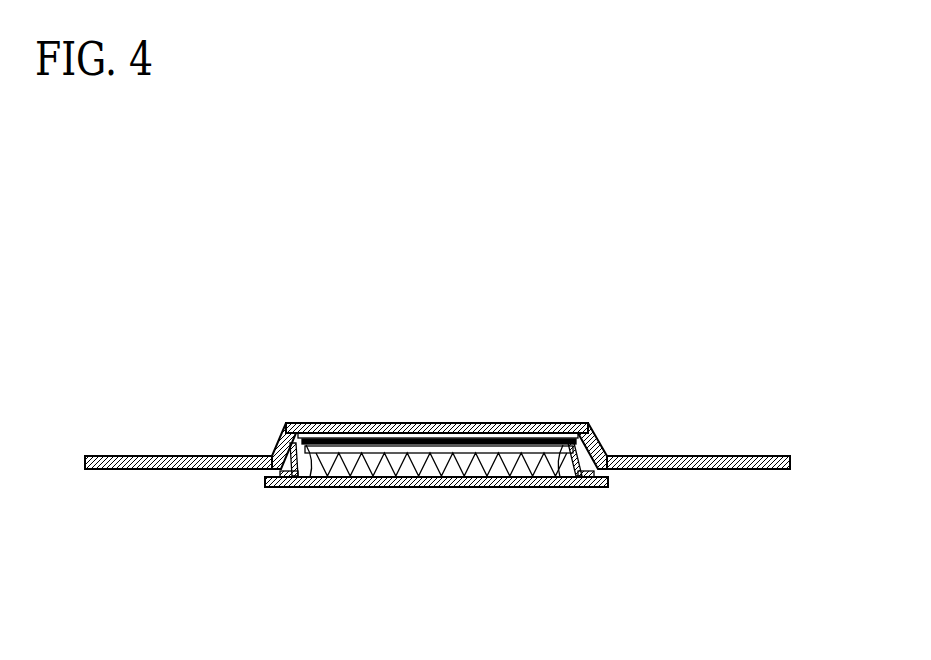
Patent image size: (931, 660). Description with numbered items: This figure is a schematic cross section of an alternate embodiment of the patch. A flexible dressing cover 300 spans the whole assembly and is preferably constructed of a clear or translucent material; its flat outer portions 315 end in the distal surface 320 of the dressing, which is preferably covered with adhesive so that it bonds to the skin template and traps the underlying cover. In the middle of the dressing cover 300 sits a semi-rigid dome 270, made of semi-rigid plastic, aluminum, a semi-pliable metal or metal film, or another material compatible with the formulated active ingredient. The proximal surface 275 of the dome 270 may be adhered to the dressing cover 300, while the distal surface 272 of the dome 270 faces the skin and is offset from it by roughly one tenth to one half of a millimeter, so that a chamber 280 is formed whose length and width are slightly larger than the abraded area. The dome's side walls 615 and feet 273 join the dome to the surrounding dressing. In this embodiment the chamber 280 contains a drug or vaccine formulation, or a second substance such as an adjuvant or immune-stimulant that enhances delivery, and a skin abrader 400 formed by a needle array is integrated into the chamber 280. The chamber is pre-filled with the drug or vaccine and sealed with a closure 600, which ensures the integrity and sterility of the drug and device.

The dressing cover 300 is at (745, 440).
The flat portion of frame 315 is at (110, 455).
The distal surface of dressing 320 is at (172, 470).
The semi-rigid dome 270 is at (424, 412).
The proximal surface of dome 275 is at (335, 428).
The side wall member 615 is at (280, 443).
The foot portion 273 is at (291, 478).
The distal surface of dome 272 is at (313, 480).
The closure 600 is at (442, 502).
The skin abrader 400 is at (494, 478).
The chamber 280 is at (572, 487).